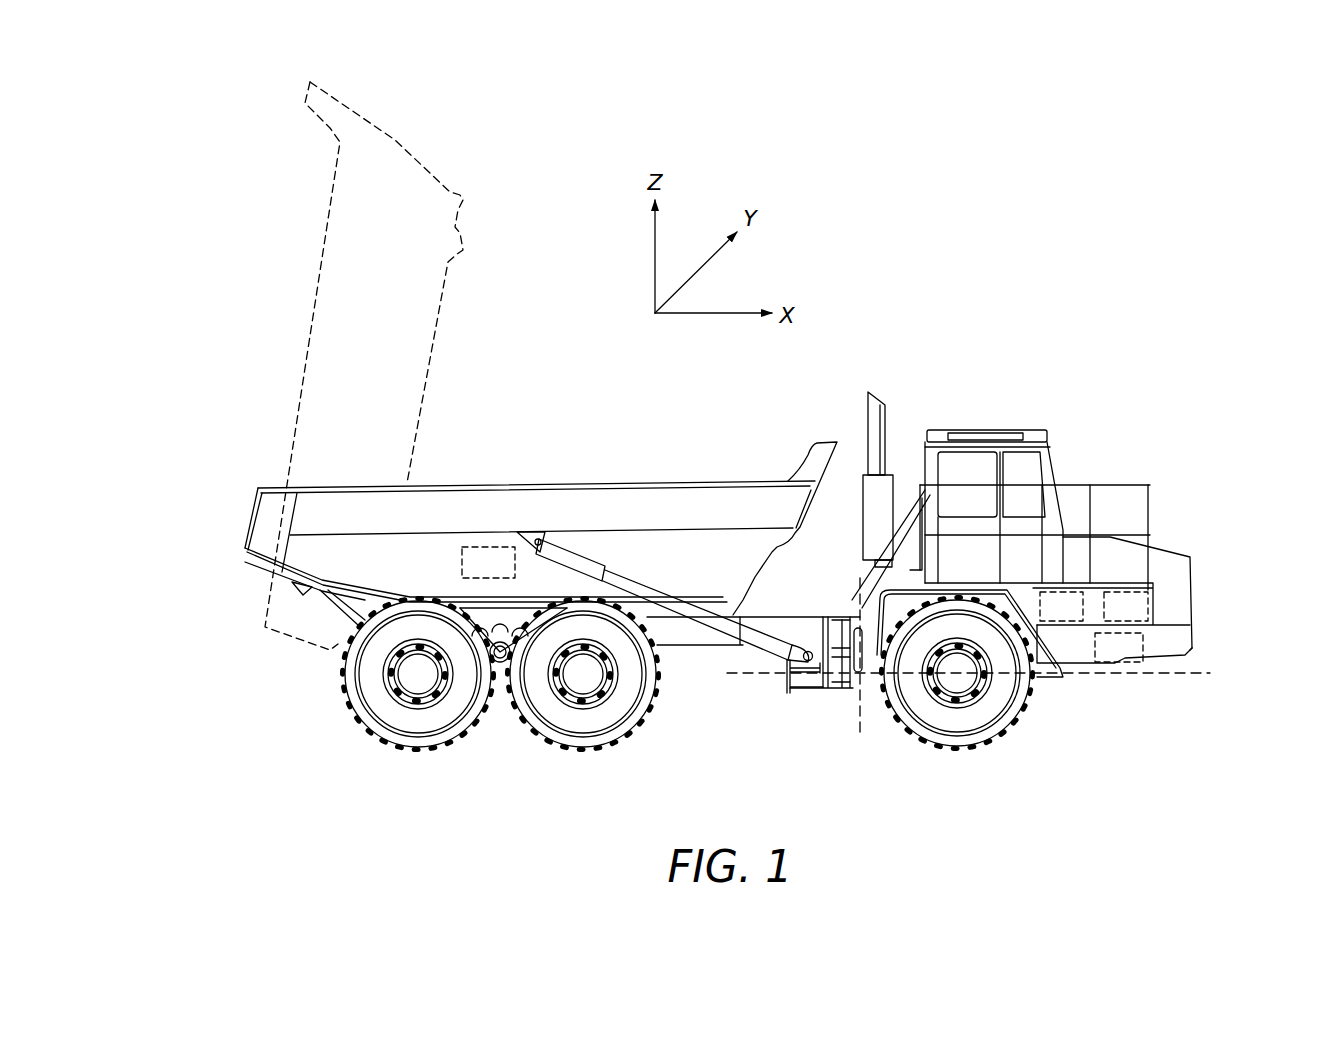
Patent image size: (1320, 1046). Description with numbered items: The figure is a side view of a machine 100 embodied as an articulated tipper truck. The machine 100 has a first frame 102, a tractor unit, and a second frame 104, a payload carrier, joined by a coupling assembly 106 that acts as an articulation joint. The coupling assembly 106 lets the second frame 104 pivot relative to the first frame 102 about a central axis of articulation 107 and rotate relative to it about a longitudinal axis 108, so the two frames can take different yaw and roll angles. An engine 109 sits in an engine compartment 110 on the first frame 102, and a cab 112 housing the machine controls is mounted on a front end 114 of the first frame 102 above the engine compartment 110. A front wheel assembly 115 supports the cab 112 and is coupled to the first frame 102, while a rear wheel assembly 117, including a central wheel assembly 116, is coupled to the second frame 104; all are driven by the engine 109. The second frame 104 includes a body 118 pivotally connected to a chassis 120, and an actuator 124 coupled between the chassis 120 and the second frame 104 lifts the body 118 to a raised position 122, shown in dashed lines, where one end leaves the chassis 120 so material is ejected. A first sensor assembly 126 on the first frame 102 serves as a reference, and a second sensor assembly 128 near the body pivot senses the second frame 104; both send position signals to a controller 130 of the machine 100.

The machine 100 is at (222, 140).
The first frame 102 is at (993, 484).
The second frame 104 is at (487, 523).
The coupling assembly 106 is at (840, 693).
The central axis of articulation 107 is at (1185, 676).
The longitudinal axis 108 is at (860, 737).
The engine 109 is at (1126, 606).
The engine compartment 110 is at (1073, 581).
The cab 112 is at (988, 431).
The front end 114 is at (1190, 652).
The front wheel assembly 115 is at (1032, 720).
The central wheel assembly 116 is at (648, 735).
The rear wheel assembly 117 is at (345, 733).
The body 118 is at (530, 483).
The chassis 120 is at (778, 680).
The raised position 122 is at (403, 142).
The actuator 124 is at (697, 627).
The first sensor assembly 126 is at (1119, 647).
The second sensor assembly 128 is at (488, 562).
The controller 130 is at (1061, 606).